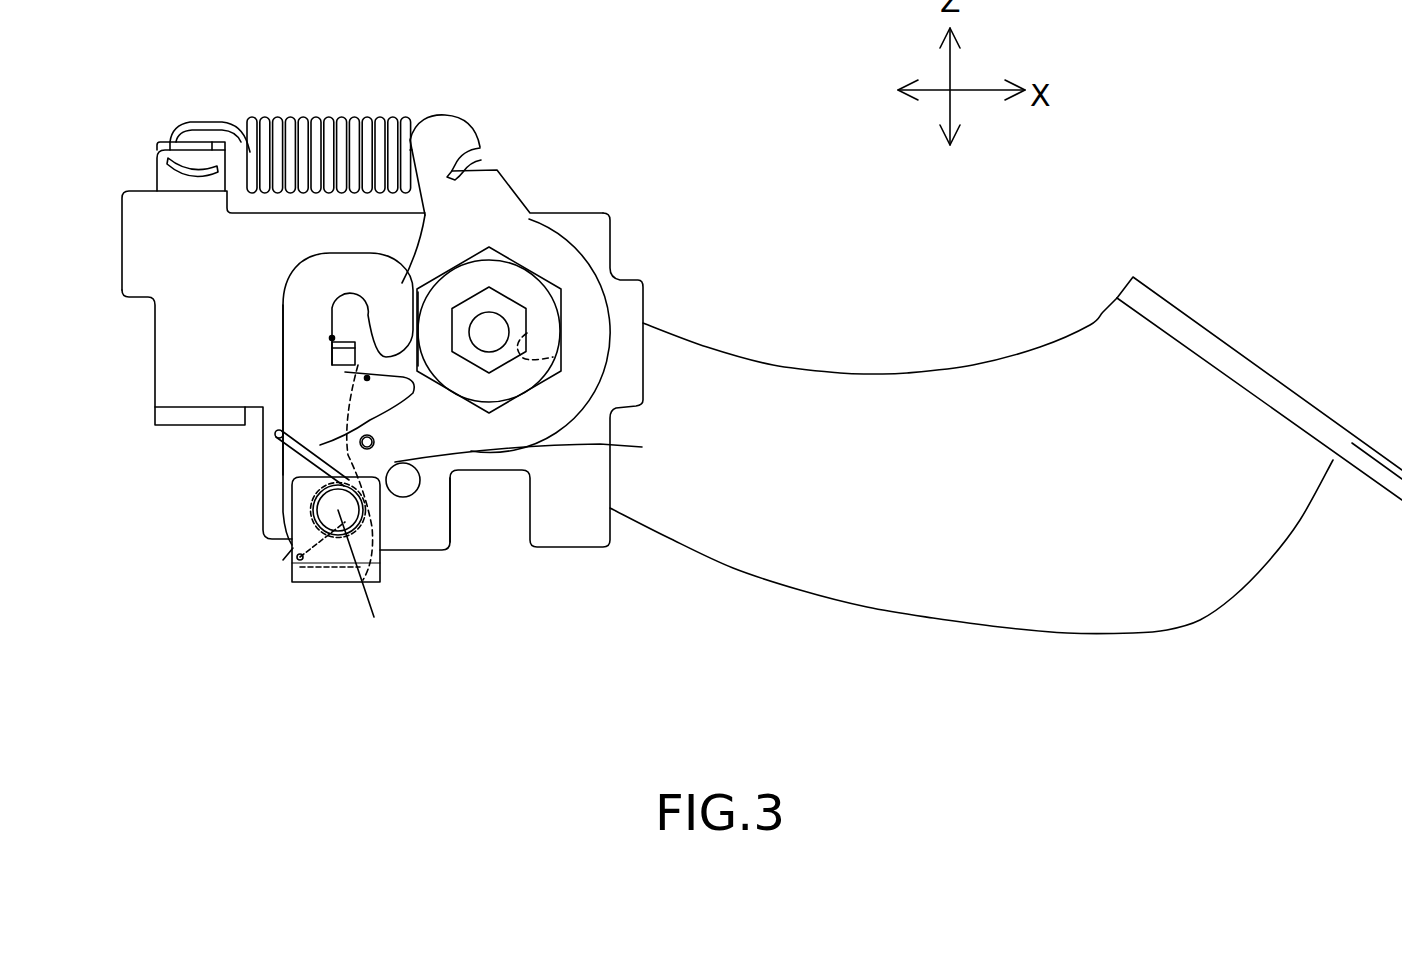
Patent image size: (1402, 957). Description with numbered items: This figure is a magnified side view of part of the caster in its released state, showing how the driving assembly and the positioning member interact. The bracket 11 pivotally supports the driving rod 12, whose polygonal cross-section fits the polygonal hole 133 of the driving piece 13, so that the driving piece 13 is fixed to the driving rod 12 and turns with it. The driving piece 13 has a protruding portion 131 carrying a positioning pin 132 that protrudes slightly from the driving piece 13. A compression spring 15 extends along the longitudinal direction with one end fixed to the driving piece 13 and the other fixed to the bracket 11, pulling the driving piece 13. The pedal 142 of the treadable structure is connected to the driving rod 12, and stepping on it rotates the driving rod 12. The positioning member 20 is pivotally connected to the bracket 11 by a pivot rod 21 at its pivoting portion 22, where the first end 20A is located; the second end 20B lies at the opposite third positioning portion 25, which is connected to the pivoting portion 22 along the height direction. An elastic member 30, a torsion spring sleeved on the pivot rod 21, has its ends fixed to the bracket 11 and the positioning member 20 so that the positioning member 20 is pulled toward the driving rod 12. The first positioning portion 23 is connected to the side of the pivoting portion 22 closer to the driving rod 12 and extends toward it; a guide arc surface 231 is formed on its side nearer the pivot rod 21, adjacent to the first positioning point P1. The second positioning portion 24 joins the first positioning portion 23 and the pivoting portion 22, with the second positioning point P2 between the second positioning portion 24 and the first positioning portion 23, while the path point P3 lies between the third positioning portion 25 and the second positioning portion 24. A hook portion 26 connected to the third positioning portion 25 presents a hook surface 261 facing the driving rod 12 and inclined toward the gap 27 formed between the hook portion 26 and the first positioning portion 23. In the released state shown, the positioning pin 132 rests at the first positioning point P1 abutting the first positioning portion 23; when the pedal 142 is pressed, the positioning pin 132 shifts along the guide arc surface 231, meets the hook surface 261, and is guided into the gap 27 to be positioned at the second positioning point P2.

The bracket 11 is at (138, 249).
The driving rod 12 is at (513, 308).
The driving piece 13 is at (540, 237).
The protruding portion 131 is at (395, 432).
The positioning pin 132 is at (392, 445).
The polygonal hole 133 is at (553, 357).
The pedal 142 is at (1252, 362).
The compression spring 15 is at (265, 118).
The positioning member 20 is at (329, 155).
The first end 20A is at (283, 560).
The second end 20B is at (352, 240).
The pivot rod 21 is at (368, 450).
The pivoting portion 22 is at (297, 413).
The first positioning portion 23 is at (400, 393).
The guide arc surface 231 is at (448, 478).
The second positioning portion 24 is at (343, 356).
The third positioning portion 25 is at (313, 283).
The hook portion 26 is at (398, 295).
The hook surface 261 is at (465, 305).
The gap 27 is at (428, 370).
The elastic member 30 is at (340, 560).
The first positioning point P1 is at (320, 445).
The second positioning point P2 is at (367, 378).
The path point P3 is at (330, 337).